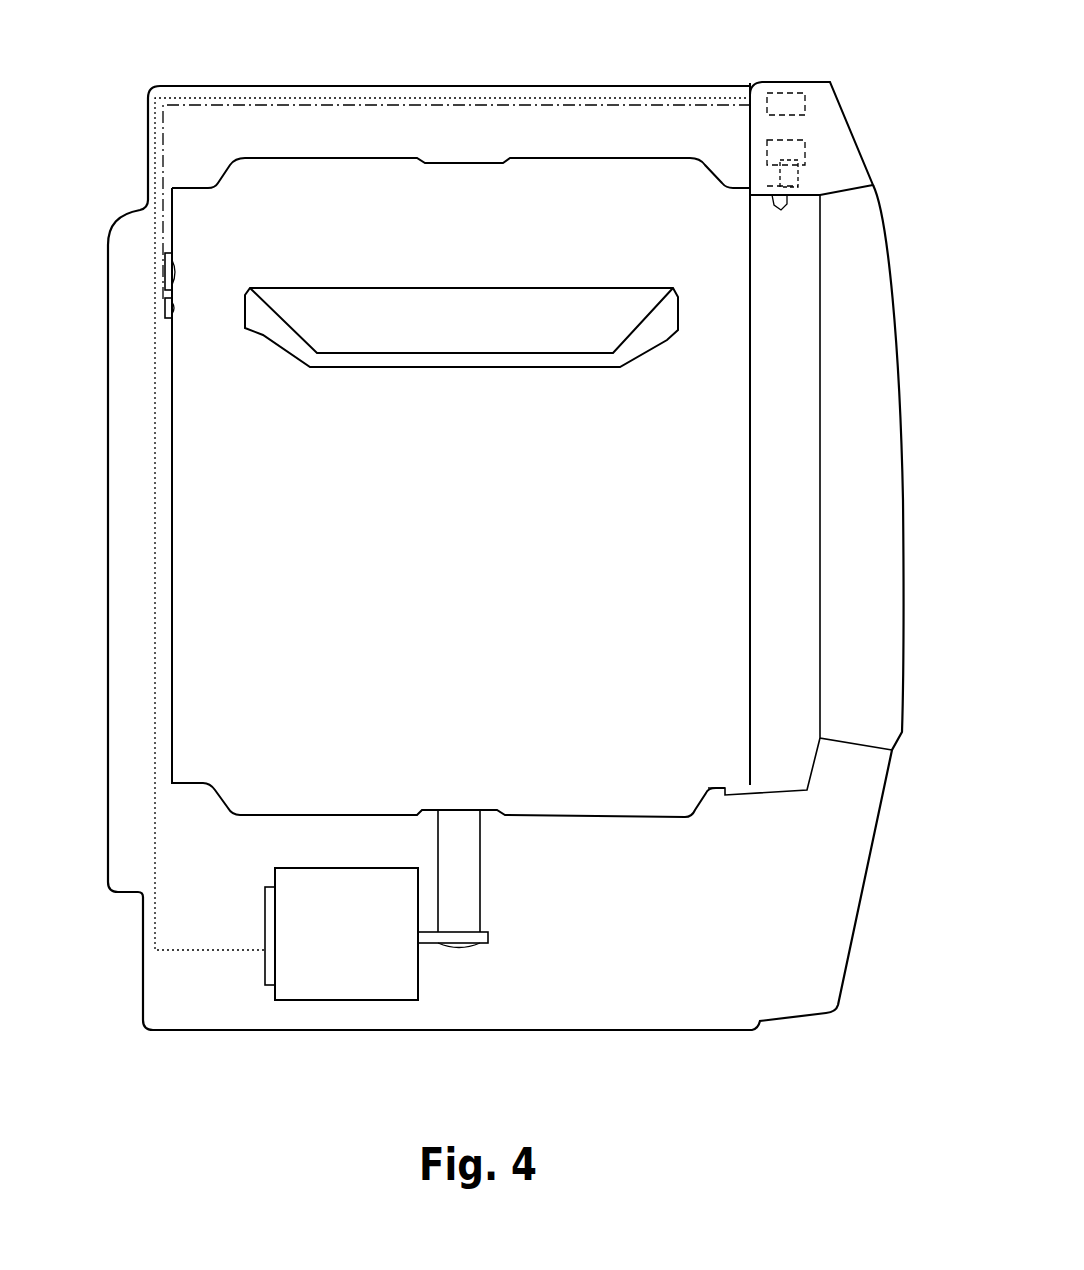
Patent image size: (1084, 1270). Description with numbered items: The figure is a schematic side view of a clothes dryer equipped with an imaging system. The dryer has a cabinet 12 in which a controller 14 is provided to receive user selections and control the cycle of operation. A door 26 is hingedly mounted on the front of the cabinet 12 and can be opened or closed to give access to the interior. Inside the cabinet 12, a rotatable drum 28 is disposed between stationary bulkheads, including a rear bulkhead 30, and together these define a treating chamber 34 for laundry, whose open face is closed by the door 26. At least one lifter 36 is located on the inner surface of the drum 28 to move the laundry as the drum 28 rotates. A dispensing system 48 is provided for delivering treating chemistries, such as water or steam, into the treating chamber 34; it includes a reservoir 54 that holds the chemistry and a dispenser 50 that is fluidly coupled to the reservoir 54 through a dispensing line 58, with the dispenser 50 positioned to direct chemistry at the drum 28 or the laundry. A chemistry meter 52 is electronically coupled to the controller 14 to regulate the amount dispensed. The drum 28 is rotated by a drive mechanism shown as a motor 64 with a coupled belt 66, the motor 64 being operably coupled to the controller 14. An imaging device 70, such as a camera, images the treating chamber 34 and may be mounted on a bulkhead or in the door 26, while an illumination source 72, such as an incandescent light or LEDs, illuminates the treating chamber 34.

The cabinet 12 is at (210, 87).
The controller 14 is at (777, 97).
The door 26 is at (895, 308).
The rotatable drum 28 is at (380, 158).
The rear bulkhead 30 is at (170, 682).
The treating chamber 34 is at (255, 514).
The lifter 36 is at (493, 317).
The dispensing system 48 is at (812, 185).
The dispenser 50 is at (785, 207).
The chemistry meter 52 is at (810, 165).
The reservoir 54 is at (810, 148).
The dispensing line 58 is at (785, 175).
The motor 64 is at (320, 957).
The belt 66 is at (468, 902).
The imaging device 70 is at (167, 317).
The illumination source 72 is at (168, 263).